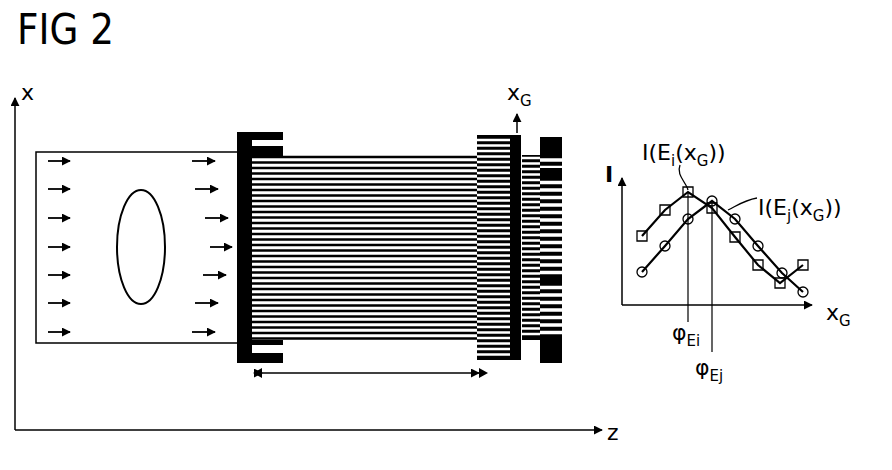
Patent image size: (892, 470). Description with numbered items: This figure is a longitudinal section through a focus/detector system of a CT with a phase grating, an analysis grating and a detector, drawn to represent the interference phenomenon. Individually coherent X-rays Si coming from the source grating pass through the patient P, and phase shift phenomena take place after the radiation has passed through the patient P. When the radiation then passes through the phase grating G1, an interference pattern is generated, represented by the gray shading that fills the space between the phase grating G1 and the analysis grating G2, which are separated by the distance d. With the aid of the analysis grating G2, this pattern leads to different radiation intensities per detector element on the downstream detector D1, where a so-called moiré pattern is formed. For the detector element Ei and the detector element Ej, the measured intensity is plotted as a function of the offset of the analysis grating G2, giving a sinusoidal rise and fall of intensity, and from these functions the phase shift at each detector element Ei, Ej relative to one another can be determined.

The X-rays Si is at (56, 158).
The patient P is at (138, 190).
The phase grating G1 is at (258, 132).
The analysis grating G2 is at (483, 135).
The detector D1 is at (562, 128).
The i-th detector element Ei is at (562, 173).
The j-th detector element Ej is at (562, 280).
The distance from the phase grating to the analysis grating d is at (362, 375).